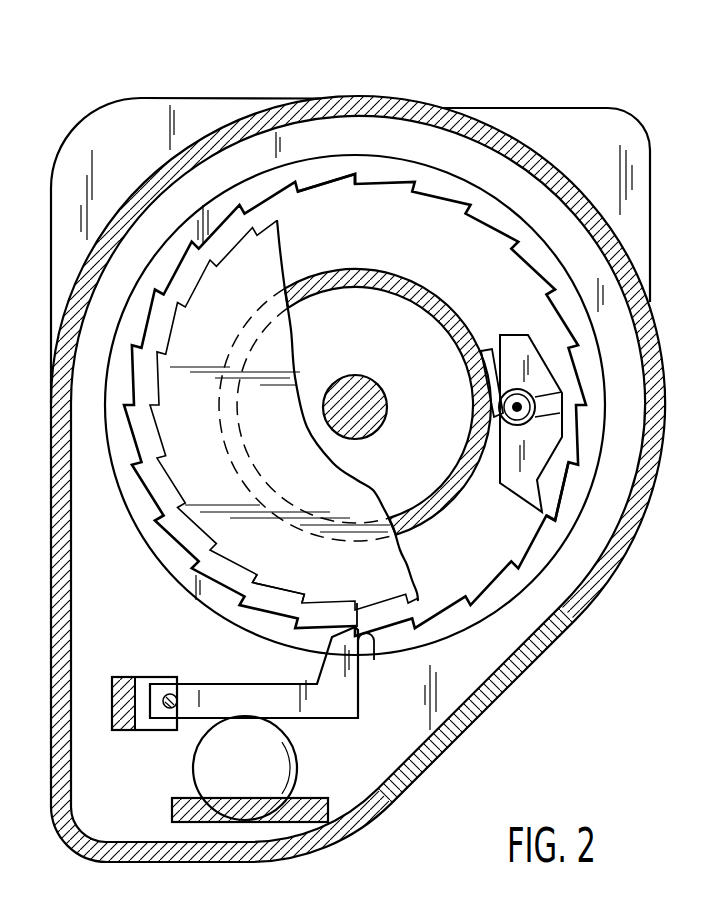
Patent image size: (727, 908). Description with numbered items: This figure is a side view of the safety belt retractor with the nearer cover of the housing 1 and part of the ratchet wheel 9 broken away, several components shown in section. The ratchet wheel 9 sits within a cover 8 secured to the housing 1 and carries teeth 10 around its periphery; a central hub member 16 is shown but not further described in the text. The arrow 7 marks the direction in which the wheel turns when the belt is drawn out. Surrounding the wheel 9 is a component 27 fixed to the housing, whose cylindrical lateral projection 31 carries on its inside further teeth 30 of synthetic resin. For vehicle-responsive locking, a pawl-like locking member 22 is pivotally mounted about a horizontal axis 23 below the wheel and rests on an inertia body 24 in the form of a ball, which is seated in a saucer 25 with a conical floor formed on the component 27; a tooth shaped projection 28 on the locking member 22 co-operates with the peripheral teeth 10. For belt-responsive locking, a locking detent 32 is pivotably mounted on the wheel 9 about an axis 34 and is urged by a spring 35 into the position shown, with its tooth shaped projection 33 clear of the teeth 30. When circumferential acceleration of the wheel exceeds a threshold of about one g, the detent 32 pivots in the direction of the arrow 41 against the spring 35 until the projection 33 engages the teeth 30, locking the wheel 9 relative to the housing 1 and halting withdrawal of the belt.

The housing 1 is at (141, 97).
The arrow 7 is at (352, 355).
The cover 8 is at (533, 166).
The ratchet wheel 9 is at (273, 253).
The teeth 10 is at (258, 586).
The hub shaft 16 is at (367, 432).
The locking member 22 is at (218, 694).
The horizontal axis 23 is at (169, 696).
The inertia body 24 is at (290, 762).
The saucer 25 is at (187, 810).
The component 27 is at (447, 146).
The tooth shaped projection 28 is at (357, 632).
The teeth 30 is at (417, 181).
The cylindrical lateral projection 31 is at (349, 168).
The locking detent 32 is at (515, 347).
The tooth shaped projection 33 is at (535, 500).
The axis 34 is at (499, 410).
The spring 35 is at (538, 397).
The arrow 41 is at (524, 513).